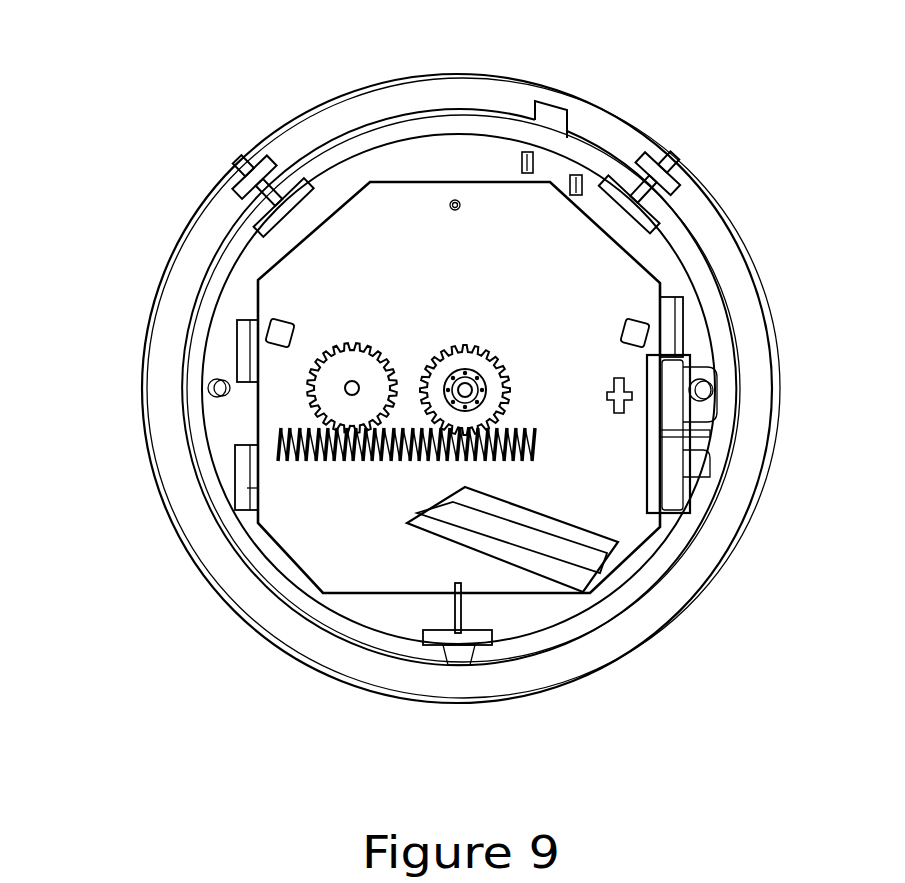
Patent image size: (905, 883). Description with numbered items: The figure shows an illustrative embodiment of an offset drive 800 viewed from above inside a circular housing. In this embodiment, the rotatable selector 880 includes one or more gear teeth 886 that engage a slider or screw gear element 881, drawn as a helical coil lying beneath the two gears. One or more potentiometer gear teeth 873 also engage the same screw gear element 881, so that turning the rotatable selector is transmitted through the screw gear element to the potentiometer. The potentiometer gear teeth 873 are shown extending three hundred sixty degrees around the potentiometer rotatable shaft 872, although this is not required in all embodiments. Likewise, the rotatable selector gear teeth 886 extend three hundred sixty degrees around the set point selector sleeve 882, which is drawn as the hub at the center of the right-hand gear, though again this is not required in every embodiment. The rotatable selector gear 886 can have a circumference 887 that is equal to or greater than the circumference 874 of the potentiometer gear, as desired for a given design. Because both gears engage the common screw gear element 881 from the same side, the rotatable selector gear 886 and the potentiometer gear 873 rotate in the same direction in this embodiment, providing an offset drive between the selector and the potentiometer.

The offset drive 800 is at (643, 80).
The potentiometer rotatable shaft 872 is at (352, 390).
The potentiometer gear teeth 873 is at (358, 346).
The circumference of the potentiometer gear 874 is at (350, 347).
The rotatable selector 880 is at (339, 389).
The screw gear element 881 is at (402, 462).
The set point selector sleeve 882 is at (480, 390).
The rotatable selector gear teeth 886 is at (470, 350).
The circumference of the rotatable selector gear 887 is at (462, 350).